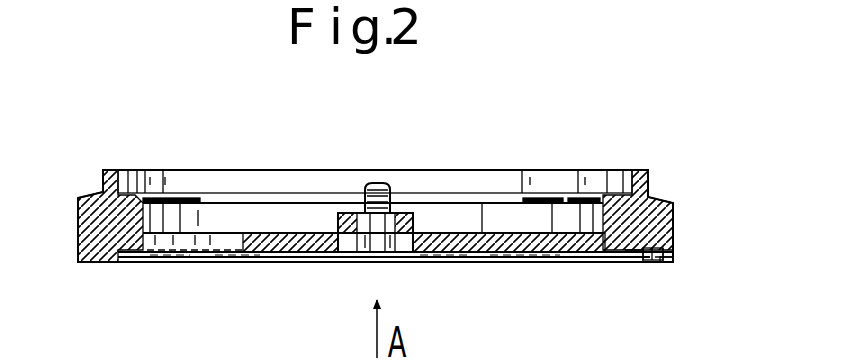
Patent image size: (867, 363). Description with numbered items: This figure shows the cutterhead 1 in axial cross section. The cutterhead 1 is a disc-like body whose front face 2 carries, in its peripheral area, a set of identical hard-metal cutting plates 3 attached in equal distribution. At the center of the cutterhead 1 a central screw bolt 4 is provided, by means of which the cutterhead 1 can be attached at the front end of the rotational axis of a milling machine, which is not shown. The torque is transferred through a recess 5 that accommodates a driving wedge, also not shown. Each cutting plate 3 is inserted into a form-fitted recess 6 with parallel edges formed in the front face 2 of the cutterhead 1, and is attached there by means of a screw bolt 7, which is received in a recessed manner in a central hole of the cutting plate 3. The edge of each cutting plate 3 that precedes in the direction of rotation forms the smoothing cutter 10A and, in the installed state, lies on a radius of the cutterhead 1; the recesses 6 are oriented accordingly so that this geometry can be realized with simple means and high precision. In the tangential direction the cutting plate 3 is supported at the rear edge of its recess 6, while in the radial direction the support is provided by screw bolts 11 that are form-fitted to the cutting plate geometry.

The cutterhead 1 is at (588, 156).
The front face 2 is at (485, 265).
The cutting plate 3 is at (672, 262).
The central screw bolt 4 is at (363, 260).
The recess 5 is at (187, 240).
The form-fitted recess 6 is at (632, 265).
The screw bolt 7 is at (677, 248).
The smoothing cutter 10A is at (662, 268).
The screw bolt 11 is at (648, 270).